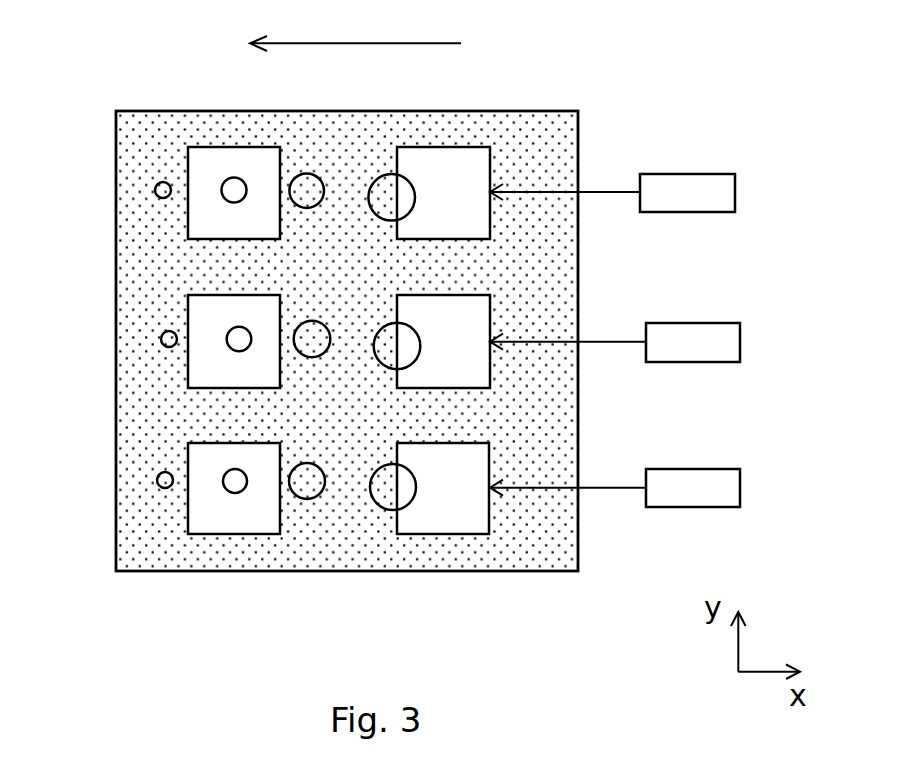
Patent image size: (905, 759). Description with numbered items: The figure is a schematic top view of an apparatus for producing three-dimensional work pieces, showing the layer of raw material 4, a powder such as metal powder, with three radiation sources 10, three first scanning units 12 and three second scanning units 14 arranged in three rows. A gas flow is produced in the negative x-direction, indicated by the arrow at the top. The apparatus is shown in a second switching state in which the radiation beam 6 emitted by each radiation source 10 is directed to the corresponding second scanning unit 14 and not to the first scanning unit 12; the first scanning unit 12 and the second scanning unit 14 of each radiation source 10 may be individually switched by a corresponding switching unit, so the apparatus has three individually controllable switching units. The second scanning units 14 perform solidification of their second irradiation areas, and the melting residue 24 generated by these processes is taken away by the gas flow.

The raw material 4 is at (131, 126).
The radiation beam 6 is at (592, 192).
The radiation source 10 is at (655, 206).
The first scanning unit 12 is at (219, 178).
The second scanning unit 14 is at (449, 181).
The melting residue 24 is at (155, 189).